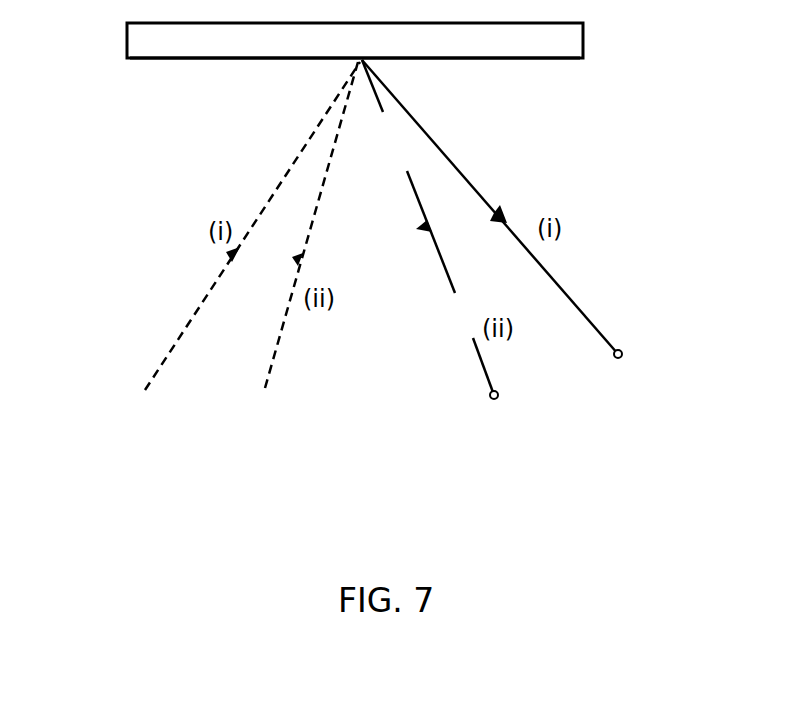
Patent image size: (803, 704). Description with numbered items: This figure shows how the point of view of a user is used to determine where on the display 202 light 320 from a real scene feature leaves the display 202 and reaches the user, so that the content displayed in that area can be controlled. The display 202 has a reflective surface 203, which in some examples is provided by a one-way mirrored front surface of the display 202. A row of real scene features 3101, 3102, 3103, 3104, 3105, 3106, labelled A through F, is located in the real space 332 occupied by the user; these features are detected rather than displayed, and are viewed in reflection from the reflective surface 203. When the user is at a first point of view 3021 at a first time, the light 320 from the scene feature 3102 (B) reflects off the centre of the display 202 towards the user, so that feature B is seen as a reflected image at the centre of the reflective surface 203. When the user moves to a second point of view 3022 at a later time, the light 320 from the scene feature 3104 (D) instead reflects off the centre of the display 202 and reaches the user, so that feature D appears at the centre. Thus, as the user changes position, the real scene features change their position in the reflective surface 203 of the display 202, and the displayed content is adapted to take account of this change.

The display 202 is at (584, 46).
The reflective surface 203 is at (143, 60).
The real space 332 is at (757, 152).
The light 320 is at (447, 275).
The point of view 3021 is at (621, 359).
The point of view 3022 is at (497, 400).
The scene feature 3101 is at (76, 432).
The scene feature 3102 is at (137, 432).
The scene feature 3103 is at (203, 432).
The scene feature 3104 is at (264, 432).
The scene feature 3105 is at (330, 432).
The scene feature 3106 is at (391, 432).